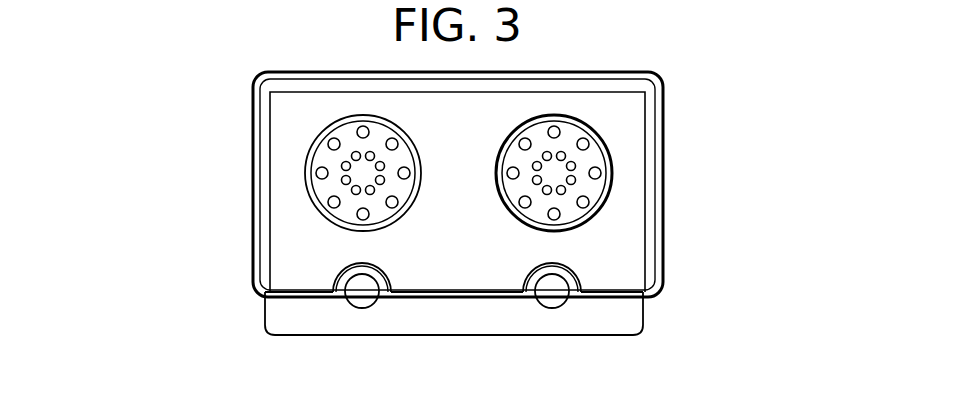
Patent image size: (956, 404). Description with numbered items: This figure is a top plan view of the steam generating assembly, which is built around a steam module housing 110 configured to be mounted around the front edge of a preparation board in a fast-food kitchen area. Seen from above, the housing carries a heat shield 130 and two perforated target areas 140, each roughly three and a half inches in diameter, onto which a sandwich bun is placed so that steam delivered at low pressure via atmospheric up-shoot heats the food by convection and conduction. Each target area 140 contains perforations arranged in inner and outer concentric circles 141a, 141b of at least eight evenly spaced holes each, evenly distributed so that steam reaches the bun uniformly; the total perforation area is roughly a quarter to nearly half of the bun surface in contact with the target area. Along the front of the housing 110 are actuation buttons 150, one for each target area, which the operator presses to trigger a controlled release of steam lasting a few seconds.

The steam module housing 110 is at (310, 312).
The heat shield 130 is at (625, 121).
The perforated target area 140 is at (588, 192).
The outer concentric circle of perforations 141a is at (334, 144).
The inner concentric circle of perforations 141b is at (356, 192).
The actuation button 150 is at (363, 295).